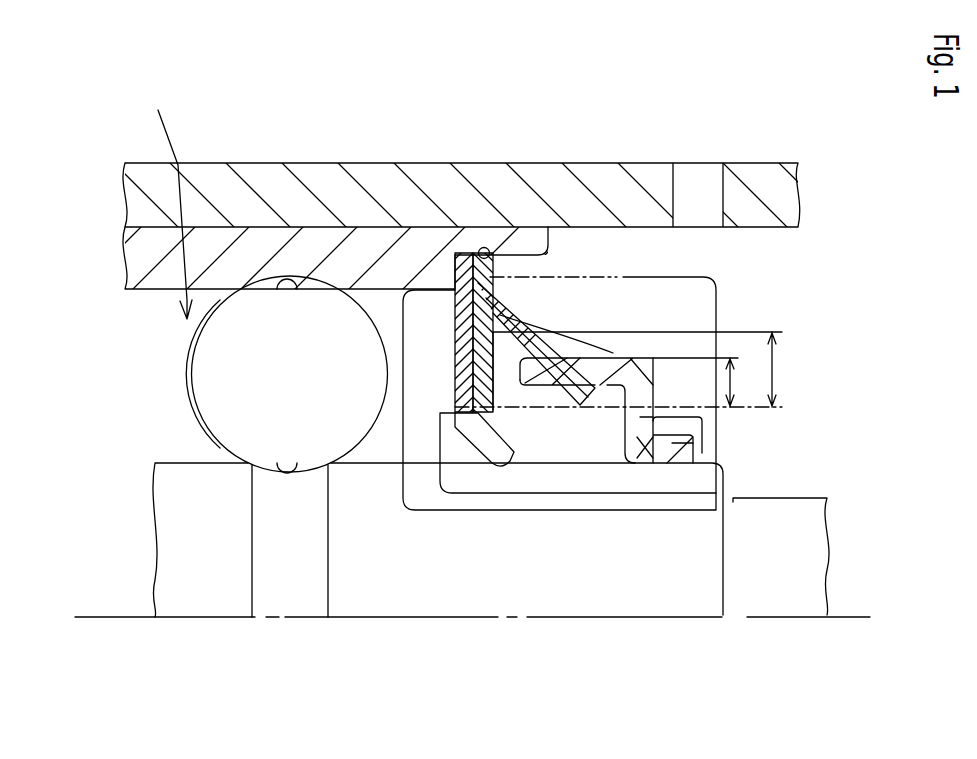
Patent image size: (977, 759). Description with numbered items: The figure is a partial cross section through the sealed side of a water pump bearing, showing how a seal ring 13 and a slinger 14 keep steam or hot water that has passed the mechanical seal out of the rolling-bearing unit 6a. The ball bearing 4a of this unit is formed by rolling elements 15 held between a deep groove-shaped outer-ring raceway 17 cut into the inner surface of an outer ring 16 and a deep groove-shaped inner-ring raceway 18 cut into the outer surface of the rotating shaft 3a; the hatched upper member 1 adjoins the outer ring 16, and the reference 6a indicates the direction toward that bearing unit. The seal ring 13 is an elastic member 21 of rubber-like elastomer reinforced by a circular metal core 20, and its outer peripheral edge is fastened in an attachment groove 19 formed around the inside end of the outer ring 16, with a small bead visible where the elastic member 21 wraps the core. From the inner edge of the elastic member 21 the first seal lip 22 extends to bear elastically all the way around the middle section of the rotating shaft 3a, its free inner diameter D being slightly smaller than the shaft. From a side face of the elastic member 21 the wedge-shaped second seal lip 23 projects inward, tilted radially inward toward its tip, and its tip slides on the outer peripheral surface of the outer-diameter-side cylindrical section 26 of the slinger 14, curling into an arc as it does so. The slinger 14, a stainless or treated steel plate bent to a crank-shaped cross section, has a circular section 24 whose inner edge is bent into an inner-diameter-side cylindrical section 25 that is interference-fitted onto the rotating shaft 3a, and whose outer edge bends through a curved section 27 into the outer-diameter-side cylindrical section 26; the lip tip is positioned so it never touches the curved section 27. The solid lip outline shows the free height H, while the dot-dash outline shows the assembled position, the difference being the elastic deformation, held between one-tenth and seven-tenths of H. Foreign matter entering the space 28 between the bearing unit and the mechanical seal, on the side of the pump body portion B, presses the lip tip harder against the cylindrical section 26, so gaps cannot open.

The outer member plate 1 is at (648, 175).
The rotating shaft 3a is at (190, 548).
The ball bearing 4a is at (222, 362).
The rolling-bearing unit 6a is at (164, 203).
The seal ring 13 is at (478, 235).
The slinger 14 is at (656, 440).
The rolling elements 15 is at (245, 403).
The outer ring 16 is at (240, 245).
The outer-ring raceway 17 is at (298, 278).
The inner-ring raceway 18 is at (290, 474).
The attachment groove 19 is at (485, 250).
The metal core 20 is at (452, 292).
The elastic member 21 is at (500, 253).
The first seal lip 22 is at (492, 460).
The second seal lip 23 is at (513, 315).
The circular section 24 is at (645, 418).
The inner-diameter-side cylindrical section 25 is at (672, 443).
The outer-diameter-side cylindrical section 26 is at (606, 378).
The curved section 27 is at (654, 357).
The space 28 is at (737, 322).
The block portion B is at (710, 507).
The inner diameter D is at (470, 493).
The height of the second seal lip H is at (775, 355).